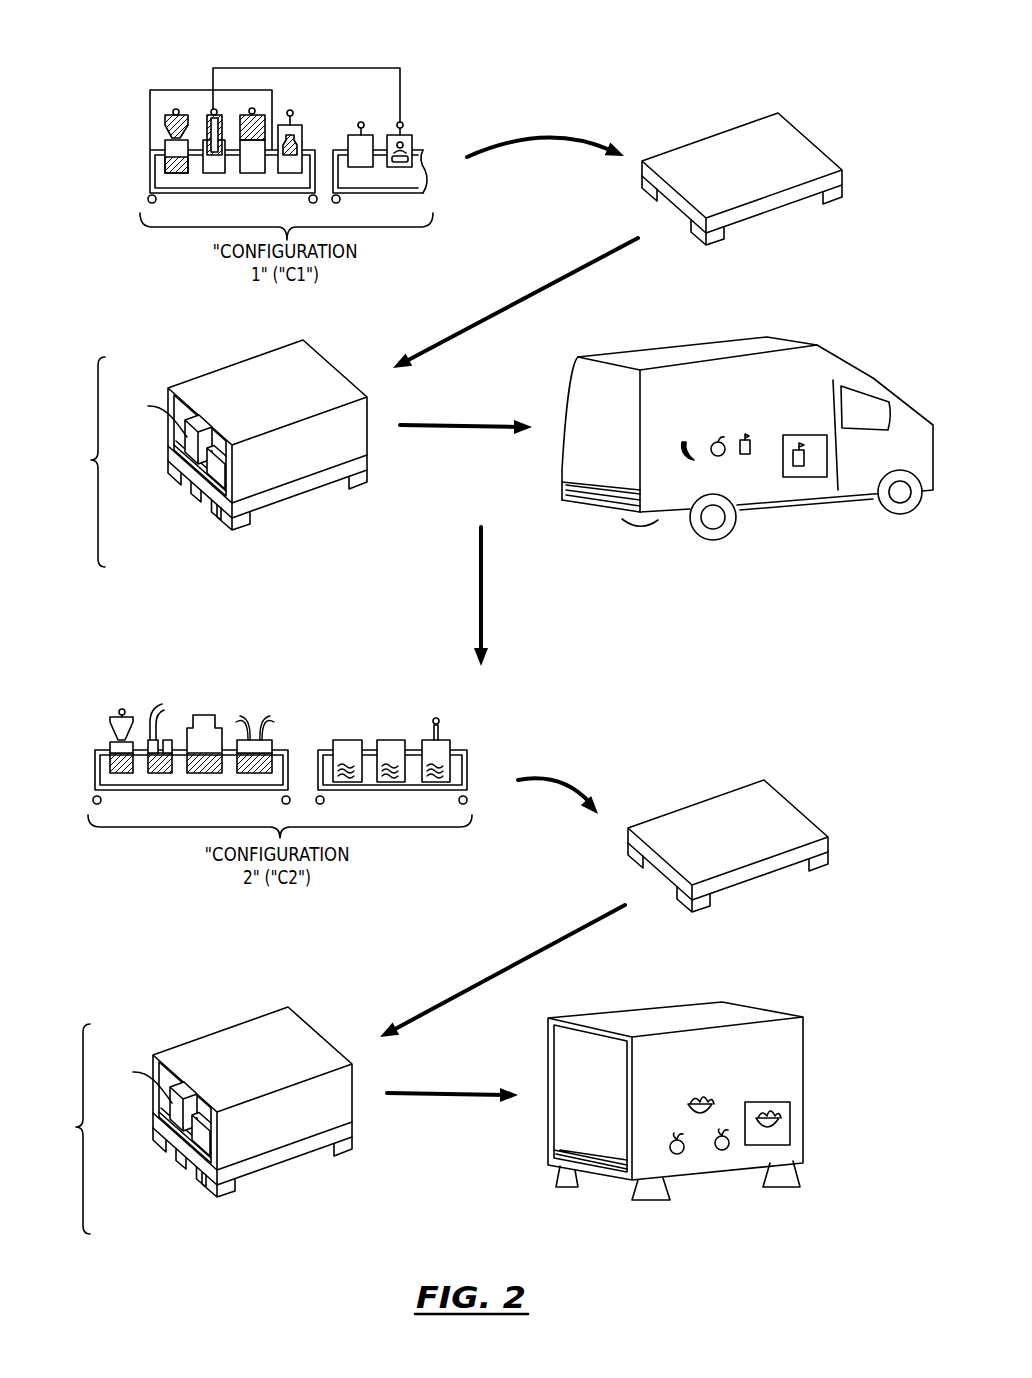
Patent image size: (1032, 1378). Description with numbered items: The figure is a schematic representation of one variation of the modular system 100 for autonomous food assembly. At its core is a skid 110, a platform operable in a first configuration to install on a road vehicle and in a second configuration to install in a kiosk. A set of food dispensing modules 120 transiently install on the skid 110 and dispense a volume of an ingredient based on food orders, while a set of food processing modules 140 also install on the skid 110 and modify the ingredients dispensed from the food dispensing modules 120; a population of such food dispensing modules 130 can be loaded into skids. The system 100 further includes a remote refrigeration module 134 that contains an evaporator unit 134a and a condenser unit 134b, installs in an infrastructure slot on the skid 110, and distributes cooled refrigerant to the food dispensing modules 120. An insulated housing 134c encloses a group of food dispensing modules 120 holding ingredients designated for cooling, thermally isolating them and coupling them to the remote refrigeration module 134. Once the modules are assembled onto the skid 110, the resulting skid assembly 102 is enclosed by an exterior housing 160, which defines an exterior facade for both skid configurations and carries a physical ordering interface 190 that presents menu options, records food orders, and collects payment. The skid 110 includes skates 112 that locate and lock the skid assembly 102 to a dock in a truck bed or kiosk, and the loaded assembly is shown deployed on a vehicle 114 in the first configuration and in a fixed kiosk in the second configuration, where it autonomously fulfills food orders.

The modular system 100 is at (114, 55).
The skid assembly 102 is at (204, 768).
The skid 110 is at (746, 150).
The skates 112 is at (205, 508).
The vehicle 114 is at (723, 780).
The food dispensing modules 120 is at (166, 468).
The food dispensing modules 130 is at (409, 471).
The remote refrigeration module 134 is at (306, 81).
The evaporator unit 134a is at (212, 165).
The condenser unit 134b is at (407, 165).
The insulated housing 134c is at (150, 115).
The food processing modules 140 is at (292, 165).
The exterior housing 160 is at (328, 362).
The physical ordering interface 190 is at (797, 477).